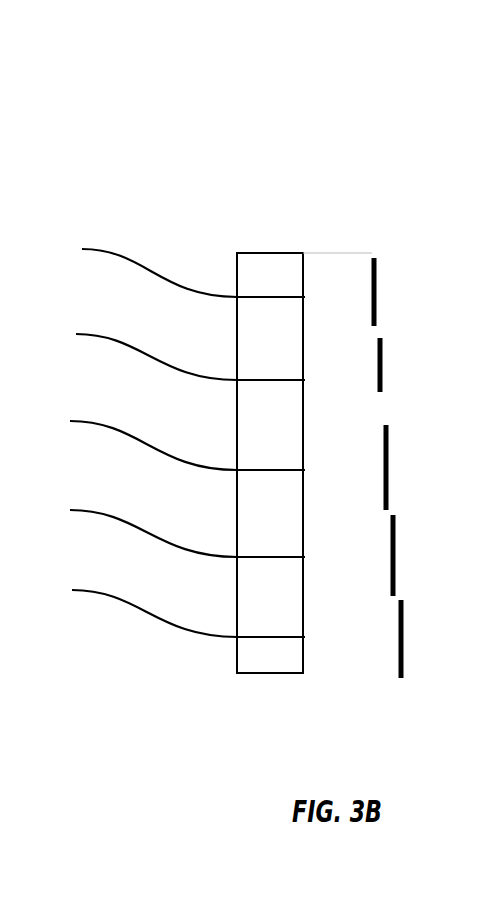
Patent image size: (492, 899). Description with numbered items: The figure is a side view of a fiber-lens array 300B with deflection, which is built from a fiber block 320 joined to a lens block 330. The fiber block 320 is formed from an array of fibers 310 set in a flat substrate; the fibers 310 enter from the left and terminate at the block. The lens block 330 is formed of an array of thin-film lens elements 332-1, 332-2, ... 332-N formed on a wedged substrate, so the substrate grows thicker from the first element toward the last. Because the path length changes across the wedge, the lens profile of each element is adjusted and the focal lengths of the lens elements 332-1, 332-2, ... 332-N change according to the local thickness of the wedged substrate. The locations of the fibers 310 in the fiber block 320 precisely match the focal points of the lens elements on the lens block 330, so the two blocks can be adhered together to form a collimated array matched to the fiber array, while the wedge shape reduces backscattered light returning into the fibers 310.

The fiber-lens array 300B is at (106, 95).
The fibers 310 is at (123, 418).
The fiber block 320 is at (263, 248).
The lens block 330 is at (340, 250).
The thin-film lens element 332-1 is at (379, 272).
The thin-film lens element 332-2 is at (387, 380).
The thin-film lens element 332-N is at (406, 640).